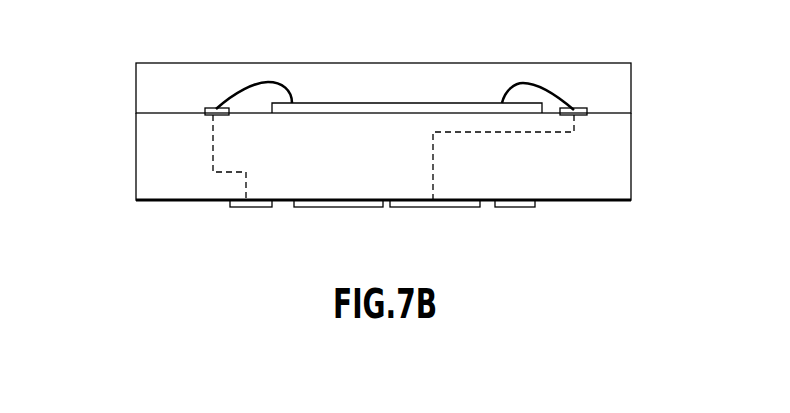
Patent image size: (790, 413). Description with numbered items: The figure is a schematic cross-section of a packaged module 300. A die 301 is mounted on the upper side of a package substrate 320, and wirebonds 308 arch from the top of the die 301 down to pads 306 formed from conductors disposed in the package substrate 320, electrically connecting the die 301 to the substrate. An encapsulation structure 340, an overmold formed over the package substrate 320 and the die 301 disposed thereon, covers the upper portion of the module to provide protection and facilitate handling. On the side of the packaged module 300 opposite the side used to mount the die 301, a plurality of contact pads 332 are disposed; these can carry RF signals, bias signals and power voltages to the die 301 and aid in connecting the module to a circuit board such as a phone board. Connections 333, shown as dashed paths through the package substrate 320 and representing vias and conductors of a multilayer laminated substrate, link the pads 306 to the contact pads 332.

The packaged module 300 is at (422, 50).
The die 301 is at (327, 102).
The pads 306 is at (223, 116).
The wirebonds 308 is at (268, 82).
The package substrate 320 is at (144, 160).
The contact pads 332 is at (505, 208).
The connections 333 is at (245, 178).
The encapsulation structure 340 is at (152, 91).